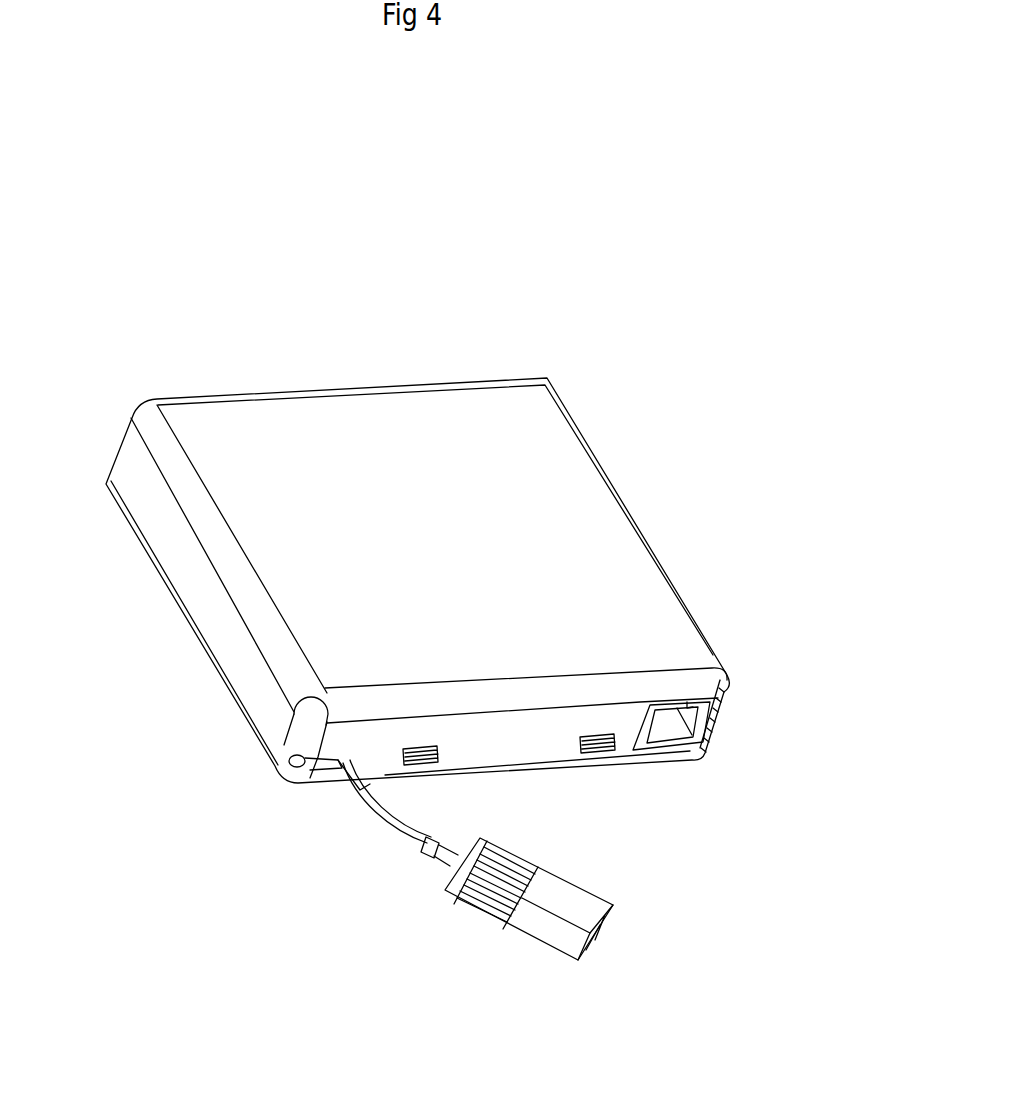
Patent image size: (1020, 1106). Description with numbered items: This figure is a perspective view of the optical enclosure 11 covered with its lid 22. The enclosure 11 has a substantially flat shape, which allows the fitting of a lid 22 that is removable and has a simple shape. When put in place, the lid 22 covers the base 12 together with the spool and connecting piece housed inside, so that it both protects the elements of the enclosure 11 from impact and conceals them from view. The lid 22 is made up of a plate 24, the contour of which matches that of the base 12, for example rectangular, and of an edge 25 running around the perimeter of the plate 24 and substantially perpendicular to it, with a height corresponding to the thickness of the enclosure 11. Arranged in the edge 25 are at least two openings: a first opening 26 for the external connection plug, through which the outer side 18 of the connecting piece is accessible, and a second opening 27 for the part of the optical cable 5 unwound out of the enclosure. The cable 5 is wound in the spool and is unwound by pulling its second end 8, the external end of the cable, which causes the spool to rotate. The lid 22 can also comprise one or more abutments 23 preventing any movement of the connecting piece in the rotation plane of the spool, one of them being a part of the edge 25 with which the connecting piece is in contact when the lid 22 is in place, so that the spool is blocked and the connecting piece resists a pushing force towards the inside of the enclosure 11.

The enclosure 11 is at (655, 247).
The lid 22 is at (531, 392).
The plate 24 is at (440, 542).
The edge 25 is at (230, 392).
The base 12 is at (248, 728).
The abutment 23 is at (722, 727).
The outer side 18 is at (678, 733).
The first opening 26 is at (665, 735).
The second opening 27 is at (322, 772).
The optical cable 5 is at (382, 820).
The second end 8 is at (573, 890).